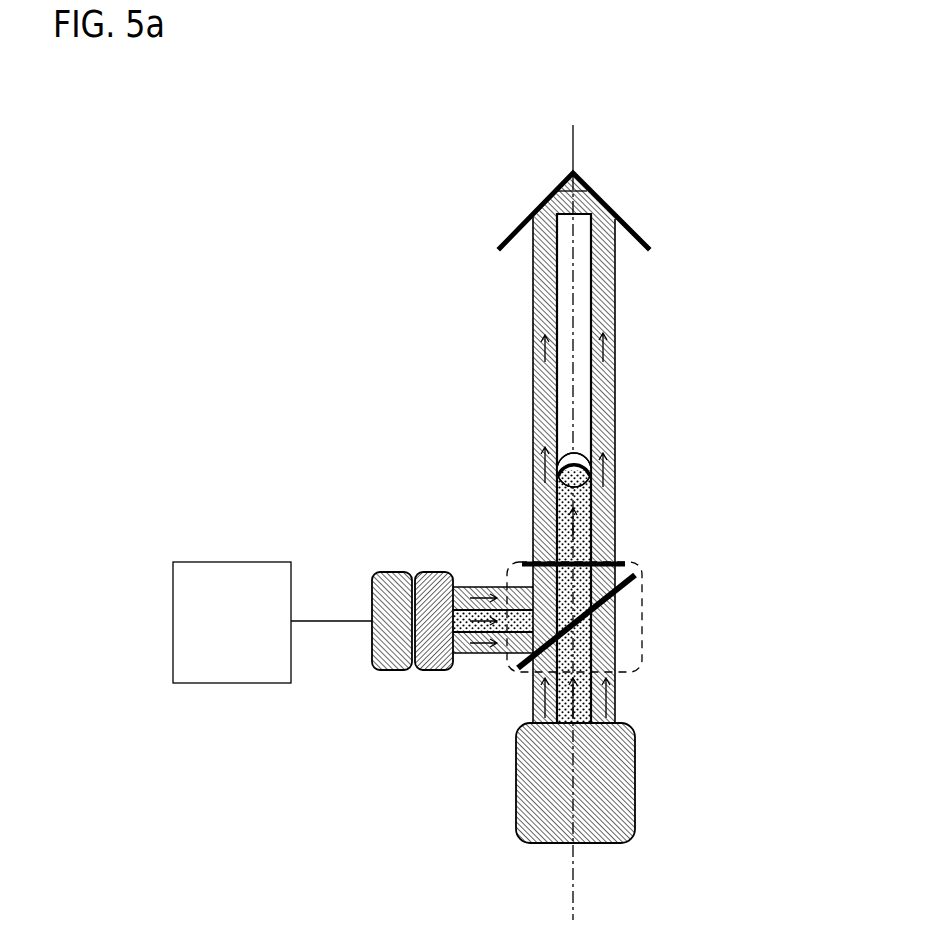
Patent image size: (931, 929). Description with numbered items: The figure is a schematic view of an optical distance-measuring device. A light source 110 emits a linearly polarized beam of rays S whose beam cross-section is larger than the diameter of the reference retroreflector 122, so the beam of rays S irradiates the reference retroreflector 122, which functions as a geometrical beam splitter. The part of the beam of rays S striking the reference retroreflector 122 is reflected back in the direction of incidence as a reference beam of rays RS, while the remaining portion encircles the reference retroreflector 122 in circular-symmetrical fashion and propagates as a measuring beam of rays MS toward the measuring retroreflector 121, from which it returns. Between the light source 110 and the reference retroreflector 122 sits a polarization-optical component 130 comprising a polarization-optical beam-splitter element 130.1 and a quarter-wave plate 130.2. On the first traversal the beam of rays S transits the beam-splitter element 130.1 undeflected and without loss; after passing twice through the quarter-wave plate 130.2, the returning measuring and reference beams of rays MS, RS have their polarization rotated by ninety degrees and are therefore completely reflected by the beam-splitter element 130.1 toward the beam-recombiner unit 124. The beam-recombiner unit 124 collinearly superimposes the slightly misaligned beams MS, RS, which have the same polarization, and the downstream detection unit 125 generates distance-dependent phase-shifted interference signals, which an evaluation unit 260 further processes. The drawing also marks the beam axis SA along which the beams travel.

The light source 110 is at (613, 788).
The measuring retroreflector 121 is at (583, 180).
The reference retroreflector 122 is at (585, 455).
The beam-recombiner unit 124 is at (430, 578).
The detection unit 125 is at (367, 578).
The polarization-optical component 130 is at (642, 563).
The polarization-optical beam-splitter element 130.1 is at (640, 592).
The lambda/4 plate 130.2 is at (622, 563).
The evaluation unit 260 is at (198, 630).
The beam axis SA is at (573, 146).
The measuring beam of rays MS is at (542, 303).
The reference beam of rays RS is at (585, 498).
The beam of rays S is at (612, 697).